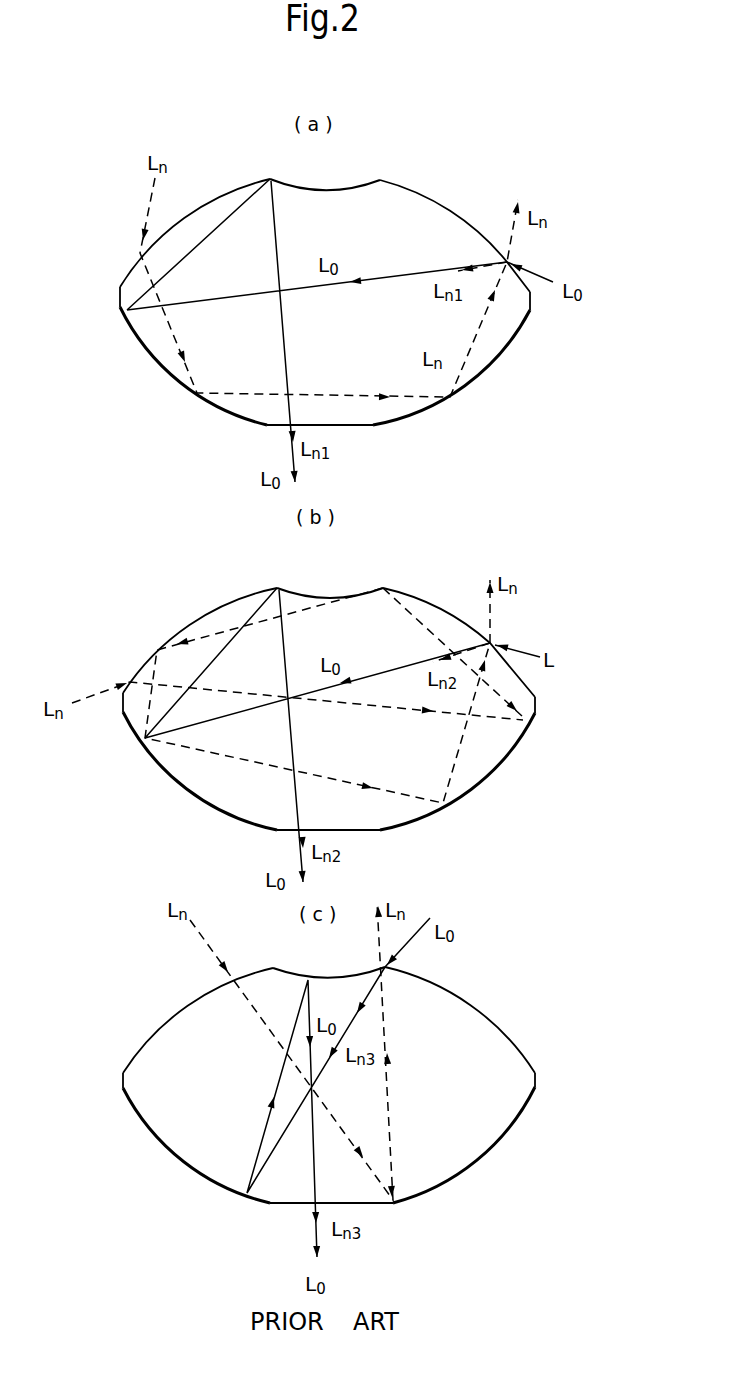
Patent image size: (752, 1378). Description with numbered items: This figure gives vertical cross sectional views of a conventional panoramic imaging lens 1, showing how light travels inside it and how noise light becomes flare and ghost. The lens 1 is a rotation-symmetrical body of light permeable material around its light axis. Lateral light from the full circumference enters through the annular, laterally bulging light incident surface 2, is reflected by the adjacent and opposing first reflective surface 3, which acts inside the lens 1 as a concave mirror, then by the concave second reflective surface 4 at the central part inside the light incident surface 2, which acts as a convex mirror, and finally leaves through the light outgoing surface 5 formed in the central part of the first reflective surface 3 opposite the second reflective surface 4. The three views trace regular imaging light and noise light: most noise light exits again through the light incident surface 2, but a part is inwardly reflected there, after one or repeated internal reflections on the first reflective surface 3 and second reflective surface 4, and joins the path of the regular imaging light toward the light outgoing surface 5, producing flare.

The panoramic imaging lens 1 is at (483, 970).
The light incident surface 2 is at (483, 1013).
The first reflective surface 3 is at (510, 1197).
The second reflective surface 4 is at (327, 978).
The light outgoing surface 5 is at (287, 1205).